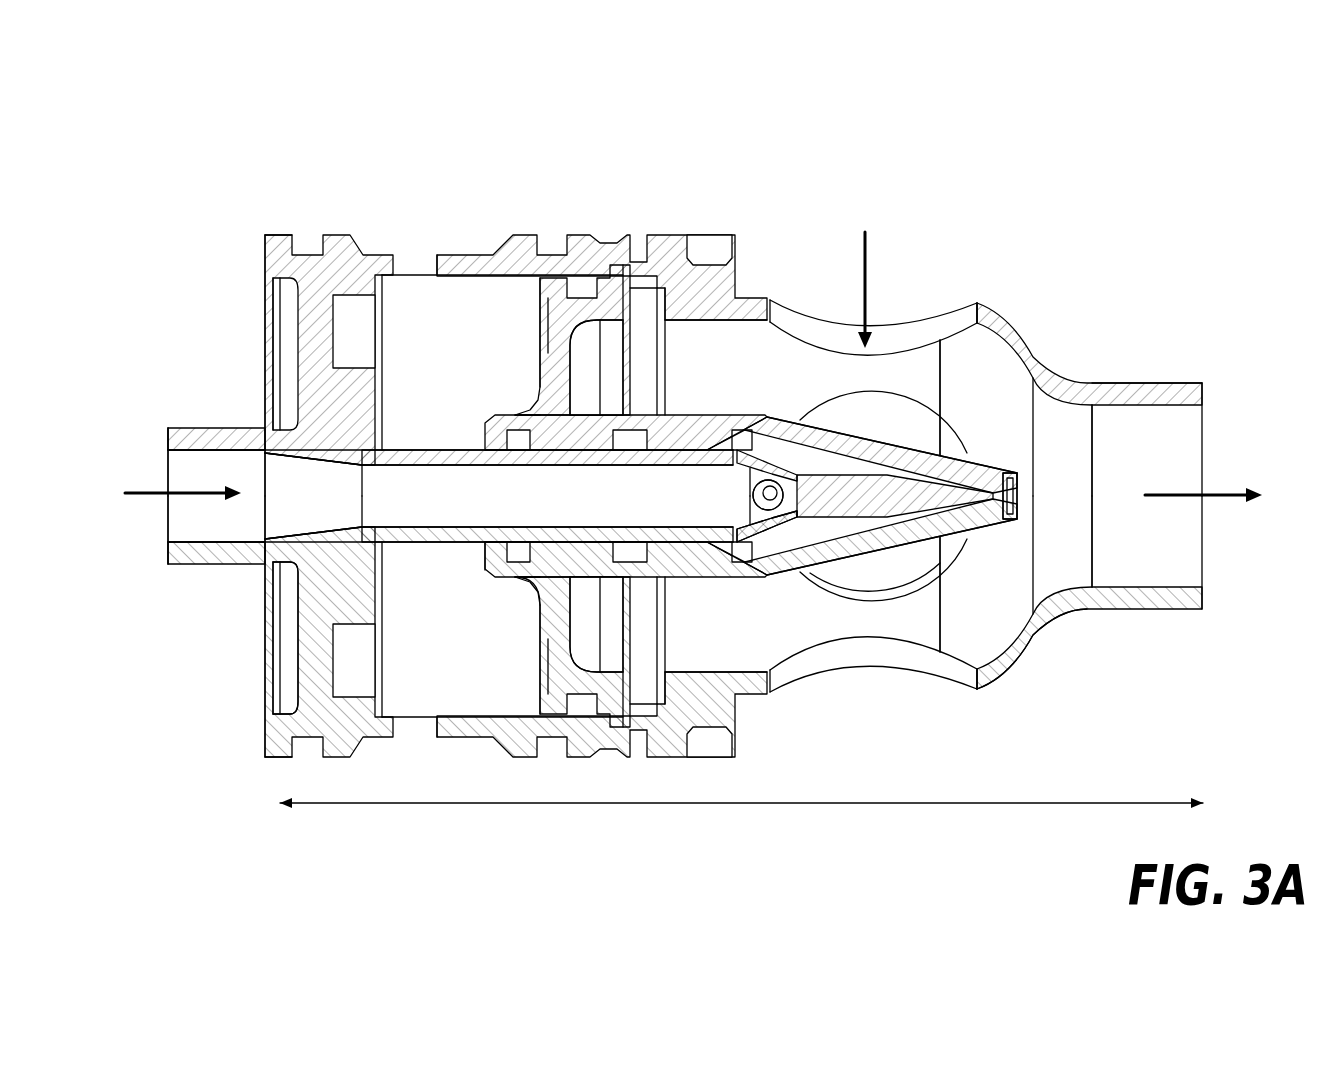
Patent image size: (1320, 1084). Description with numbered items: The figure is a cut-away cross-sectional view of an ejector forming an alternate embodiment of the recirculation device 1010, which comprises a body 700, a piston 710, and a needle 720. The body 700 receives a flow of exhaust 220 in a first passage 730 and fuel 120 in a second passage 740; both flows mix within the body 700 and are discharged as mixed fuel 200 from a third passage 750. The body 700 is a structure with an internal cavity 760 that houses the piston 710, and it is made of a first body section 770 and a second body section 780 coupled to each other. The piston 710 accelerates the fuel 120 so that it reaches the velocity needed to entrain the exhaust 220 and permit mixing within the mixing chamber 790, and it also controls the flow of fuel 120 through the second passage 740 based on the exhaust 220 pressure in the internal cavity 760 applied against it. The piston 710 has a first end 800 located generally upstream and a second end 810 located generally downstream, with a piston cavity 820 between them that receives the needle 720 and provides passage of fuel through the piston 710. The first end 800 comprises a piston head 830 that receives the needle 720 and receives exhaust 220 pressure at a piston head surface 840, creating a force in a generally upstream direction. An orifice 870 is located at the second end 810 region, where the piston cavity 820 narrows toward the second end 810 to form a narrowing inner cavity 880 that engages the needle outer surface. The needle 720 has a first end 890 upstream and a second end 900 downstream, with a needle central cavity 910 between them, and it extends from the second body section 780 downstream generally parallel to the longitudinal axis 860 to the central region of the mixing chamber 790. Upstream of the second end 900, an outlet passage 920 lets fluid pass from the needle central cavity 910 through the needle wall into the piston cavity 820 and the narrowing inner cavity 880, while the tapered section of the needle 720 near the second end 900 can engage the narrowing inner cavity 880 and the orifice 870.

The recirculation device 1010 is at (172, 172).
The second body section 780 is at (317, 290).
The needle 720 is at (460, 498).
The needle central cavity 910 is at (460, 498).
The piston 710 is at (555, 408).
The piston head 830 is at (503, 450).
The piston head surface 840 is at (580, 365).
The internal cavity 760 is at (680, 357).
The exhaust 220 is at (868, 274).
The first passage 730 is at (931, 357).
The narrowing inner cavity 880 is at (863, 465).
The body 700 is at (1106, 315).
The first body section 770 is at (1157, 393).
The third passage 750 is at (1160, 445).
The mixed fuel 200 is at (1222, 493).
The fuel 120 is at (150, 497).
The second passage 740 is at (312, 520).
The first end 890 is at (370, 517).
The first end 800 is at (488, 590).
The piston cavity 820 is at (765, 550).
The outlet passage 920 is at (777, 523).
The second end 900 is at (983, 542).
The mixing chamber 790 is at (1031, 530).
The second end 810 is at (1020, 497).
The orifice 870 is at (1058, 606).
The longitudinal axis 860 is at (610, 804).